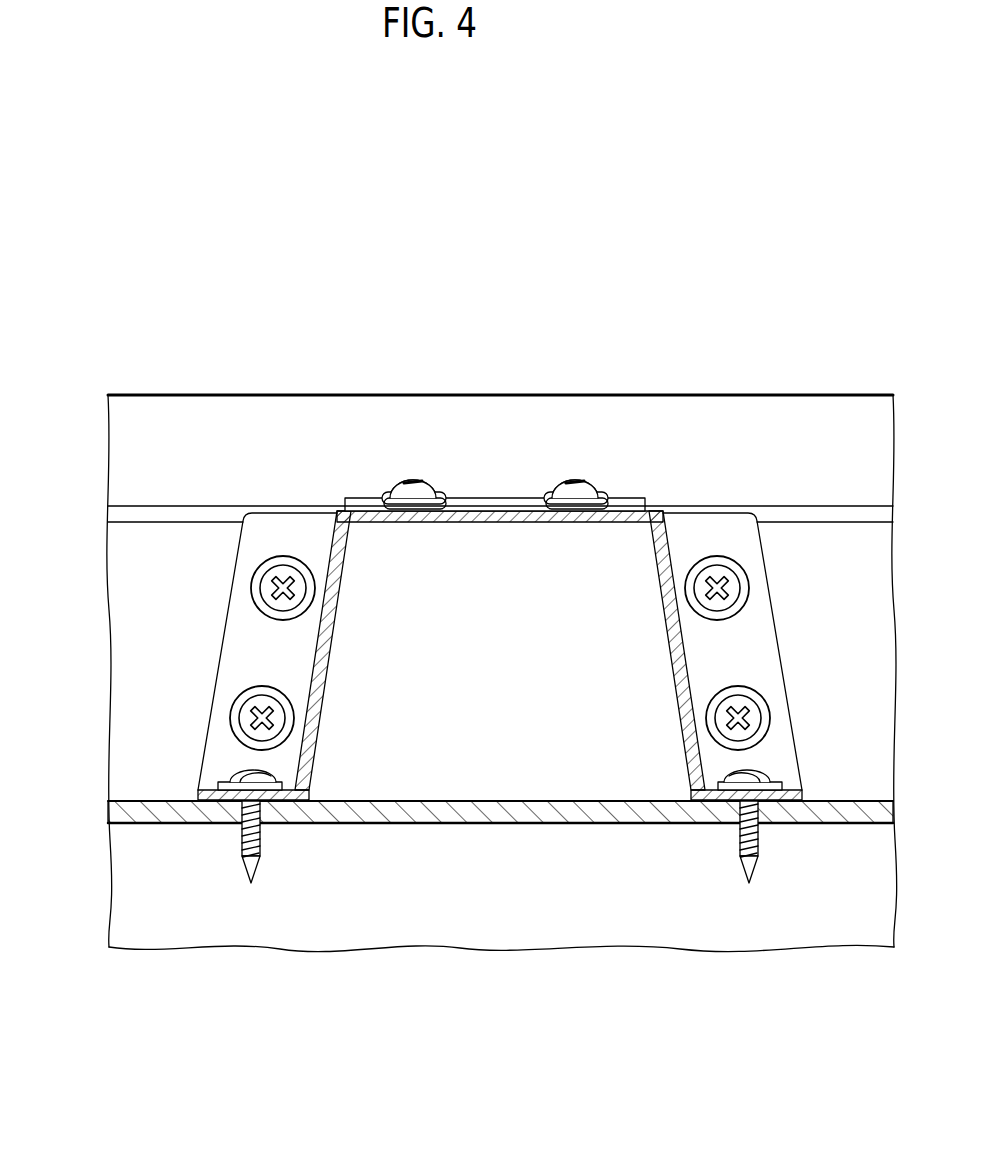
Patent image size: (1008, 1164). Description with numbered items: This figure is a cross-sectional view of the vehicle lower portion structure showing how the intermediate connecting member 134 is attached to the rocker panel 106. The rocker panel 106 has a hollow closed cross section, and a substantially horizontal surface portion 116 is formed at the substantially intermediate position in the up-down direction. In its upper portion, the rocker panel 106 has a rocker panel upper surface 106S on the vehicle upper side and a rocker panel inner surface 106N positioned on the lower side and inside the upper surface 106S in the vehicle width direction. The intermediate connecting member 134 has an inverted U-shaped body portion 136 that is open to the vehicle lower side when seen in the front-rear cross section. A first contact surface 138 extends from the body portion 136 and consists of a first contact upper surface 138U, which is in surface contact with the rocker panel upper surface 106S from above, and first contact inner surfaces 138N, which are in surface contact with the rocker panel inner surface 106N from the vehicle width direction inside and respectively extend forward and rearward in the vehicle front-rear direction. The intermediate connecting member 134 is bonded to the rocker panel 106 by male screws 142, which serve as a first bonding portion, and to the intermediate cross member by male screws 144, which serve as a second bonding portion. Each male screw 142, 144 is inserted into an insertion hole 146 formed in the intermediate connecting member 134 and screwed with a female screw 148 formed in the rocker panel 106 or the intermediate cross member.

The rocker panel 106 is at (249, 391).
The rocker panel upper surface 106S is at (170, 512).
The rocker panel inner surface 106N is at (153, 688).
The surface portion 116 is at (477, 800).
The intermediate connecting member 134 is at (494, 561).
The body portion 136 is at (640, 525).
The first contact surface 138 is at (494, 561).
The first contact upper surface 138U is at (497, 503).
The first contact inner surface 138N is at (248, 628).
The male screw 142 is at (413, 480).
The male screw 144 is at (246, 787).
The insertion hole 146 is at (262, 771).
The female screw 148 is at (261, 843).